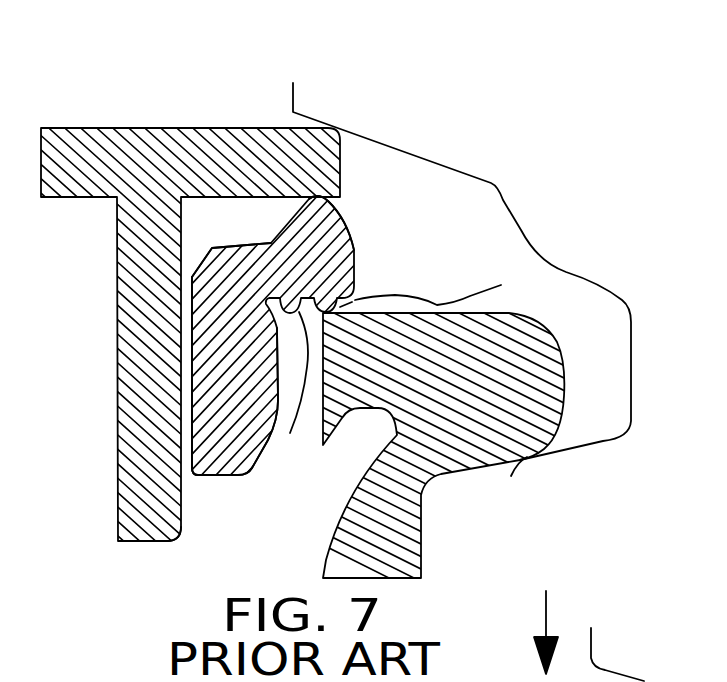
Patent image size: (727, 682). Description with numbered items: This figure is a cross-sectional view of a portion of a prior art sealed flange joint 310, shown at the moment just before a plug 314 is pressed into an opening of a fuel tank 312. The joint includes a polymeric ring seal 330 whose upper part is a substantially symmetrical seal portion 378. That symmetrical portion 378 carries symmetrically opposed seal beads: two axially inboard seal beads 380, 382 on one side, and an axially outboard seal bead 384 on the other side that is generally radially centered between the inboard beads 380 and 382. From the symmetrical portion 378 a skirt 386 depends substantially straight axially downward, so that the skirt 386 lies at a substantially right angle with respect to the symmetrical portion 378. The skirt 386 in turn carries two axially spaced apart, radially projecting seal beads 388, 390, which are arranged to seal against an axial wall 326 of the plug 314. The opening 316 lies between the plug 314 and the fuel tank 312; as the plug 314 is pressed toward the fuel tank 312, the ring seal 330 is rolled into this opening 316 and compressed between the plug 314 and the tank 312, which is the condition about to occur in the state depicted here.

The sealed flange joint 310 is at (358, 68).
The fuel tank 312 is at (517, 333).
The plug 314 is at (163, 148).
The opening 316 is at (330, 541).
The axial wall 326 is at (182, 521).
The ring seal 330 is at (395, 246).
The symmetrical seal portion 378 is at (327, 271).
The axially inboard seal bead 380 is at (287, 387).
The axially inboard seal bead 382 is at (443, 288).
The axially outboard seal bead 384 is at (315, 200).
The skirt 386 is at (223, 318).
The seal bead 388 is at (190, 404).
The seal bead 390 is at (197, 285).